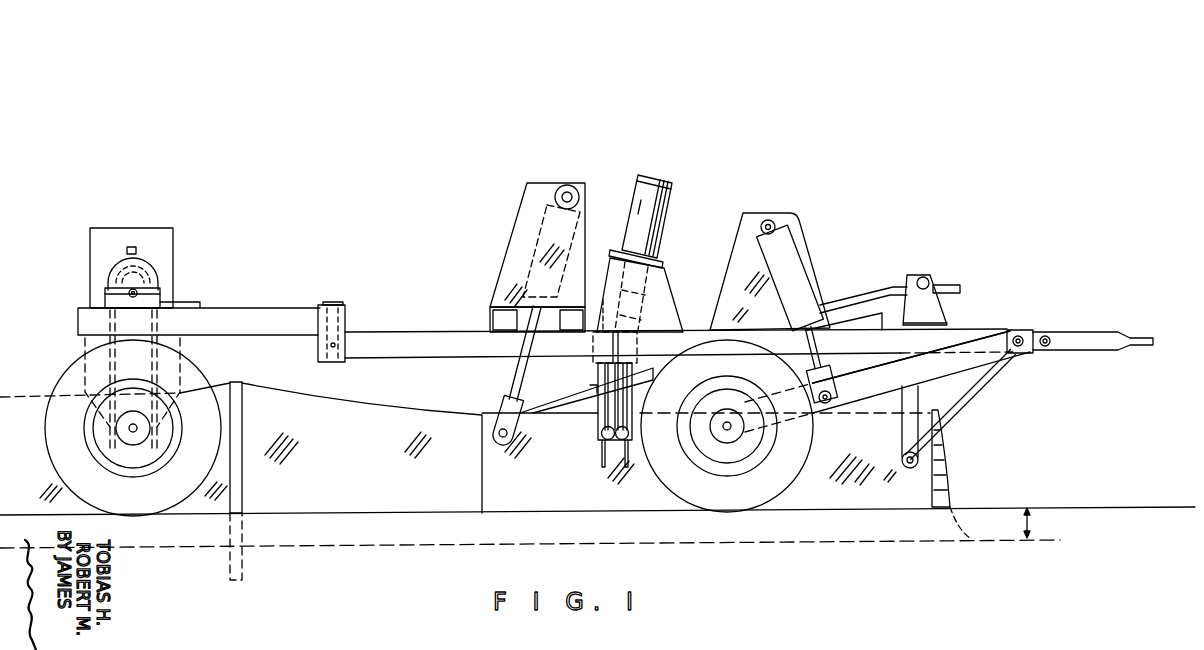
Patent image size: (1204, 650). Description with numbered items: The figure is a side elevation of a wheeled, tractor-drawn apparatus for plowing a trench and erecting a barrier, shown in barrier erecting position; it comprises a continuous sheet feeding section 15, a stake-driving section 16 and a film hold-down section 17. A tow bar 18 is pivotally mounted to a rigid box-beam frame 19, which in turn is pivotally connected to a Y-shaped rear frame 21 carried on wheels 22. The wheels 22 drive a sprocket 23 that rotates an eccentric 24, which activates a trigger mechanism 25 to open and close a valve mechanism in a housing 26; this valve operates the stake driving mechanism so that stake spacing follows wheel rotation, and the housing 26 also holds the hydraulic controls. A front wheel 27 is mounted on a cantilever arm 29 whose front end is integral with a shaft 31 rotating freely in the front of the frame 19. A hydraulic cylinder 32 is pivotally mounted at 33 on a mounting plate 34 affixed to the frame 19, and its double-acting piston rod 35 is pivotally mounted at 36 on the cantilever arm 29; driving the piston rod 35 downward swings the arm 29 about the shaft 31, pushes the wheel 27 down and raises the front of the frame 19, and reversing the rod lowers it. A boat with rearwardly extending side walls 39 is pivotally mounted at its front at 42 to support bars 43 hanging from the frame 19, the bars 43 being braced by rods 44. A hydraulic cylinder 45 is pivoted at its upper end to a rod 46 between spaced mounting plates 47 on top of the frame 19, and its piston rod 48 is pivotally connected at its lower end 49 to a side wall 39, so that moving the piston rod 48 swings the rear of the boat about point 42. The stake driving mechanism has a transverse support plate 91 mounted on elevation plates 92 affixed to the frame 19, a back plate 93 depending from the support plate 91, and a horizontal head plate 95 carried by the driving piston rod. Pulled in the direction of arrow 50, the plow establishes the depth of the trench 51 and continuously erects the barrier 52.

The continuous sheet feeding section 15 is at (843, 253).
The stake-driving section 16 is at (684, 190).
The film hold-down section 17 is at (588, 128).
The tow bar 18 is at (1103, 340).
The rigid frame 19 is at (988, 312).
The Y-shaped rear frame 21 is at (233, 320).
The wheels 22 is at (65, 383).
The sprocket 23 is at (143, 285).
The eccentric 24 is at (150, 267).
The trigger mechanism 25 is at (133, 250).
The housing 26 is at (127, 233).
The front wheel 27 is at (692, 482).
The cantilever arm 29 is at (980, 357).
The shaft 31 is at (1020, 335).
The hydraulic cylinder 32 is at (787, 250).
The pivotal mounting 33 is at (773, 220).
The mounting plate 34 is at (750, 227).
The double-acting piston rod 35 is at (805, 365).
The pivotal mounting 36 is at (822, 403).
The side wall 39 is at (907, 482).
The pivot point 42 is at (917, 457).
The support bar 43 is at (900, 413).
The rod 44 is at (963, 403).
The hydraulic cylinder 45 is at (573, 237).
The rod 46 is at (580, 193).
The mounting plate 47 is at (538, 197).
The piston rod 48 is at (518, 383).
The lower end 49 is at (498, 422).
The arrow 50 is at (1203, 340).
The trench 51 is at (1060, 500).
The barrier 52 is at (377, 423).
The support plate 91 is at (658, 260).
The elevation plate 92 is at (665, 307).
The back plate 93 is at (657, 290).
The head plate 95 is at (667, 260).